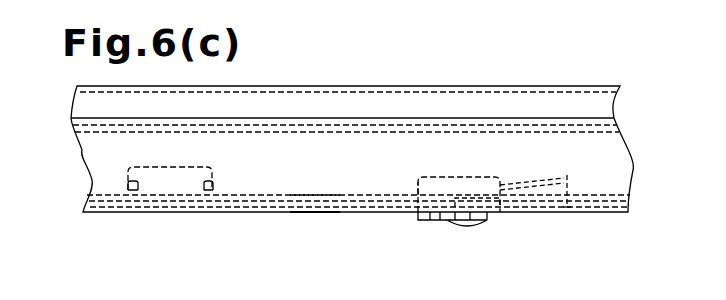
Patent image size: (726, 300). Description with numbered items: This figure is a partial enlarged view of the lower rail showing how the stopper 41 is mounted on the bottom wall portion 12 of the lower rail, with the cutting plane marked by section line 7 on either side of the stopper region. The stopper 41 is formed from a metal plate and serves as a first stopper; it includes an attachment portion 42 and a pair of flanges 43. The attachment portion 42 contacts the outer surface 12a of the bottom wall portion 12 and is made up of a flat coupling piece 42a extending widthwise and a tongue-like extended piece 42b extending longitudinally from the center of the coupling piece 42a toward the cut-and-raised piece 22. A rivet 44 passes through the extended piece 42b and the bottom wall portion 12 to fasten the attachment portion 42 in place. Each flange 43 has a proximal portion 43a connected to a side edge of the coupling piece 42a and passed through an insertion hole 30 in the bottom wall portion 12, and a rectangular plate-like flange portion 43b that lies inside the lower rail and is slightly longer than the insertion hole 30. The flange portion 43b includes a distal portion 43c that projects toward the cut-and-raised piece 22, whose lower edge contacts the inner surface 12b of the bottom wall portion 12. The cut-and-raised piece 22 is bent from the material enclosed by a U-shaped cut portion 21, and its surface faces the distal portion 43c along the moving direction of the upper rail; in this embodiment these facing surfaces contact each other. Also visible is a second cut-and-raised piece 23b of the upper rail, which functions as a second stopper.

The section line 7- 7 is at (497, 76).
The bottom wall portion 12 is at (265, 214).
The outer surface 12a is at (312, 214).
The inner surface 12b is at (312, 205).
The cut portion 21 is at (567, 212).
The cut-and-raised piece 22 is at (567, 176).
The second cut-and-raised piece 23b is at (138, 198).
The insertion hole 30 is at (448, 224).
The stopper 41 is at (497, 229).
The attachment portion 42 is at (432, 218).
The coupling piece 42a is at (434, 221).
The extended piece 42b is at (492, 221).
The flange 43 is at (450, 176).
The proximal portion 43a is at (412, 210).
The flange portion 43b is at (420, 178).
The distal portion 43c is at (505, 183).
The rivet 44 is at (463, 224).